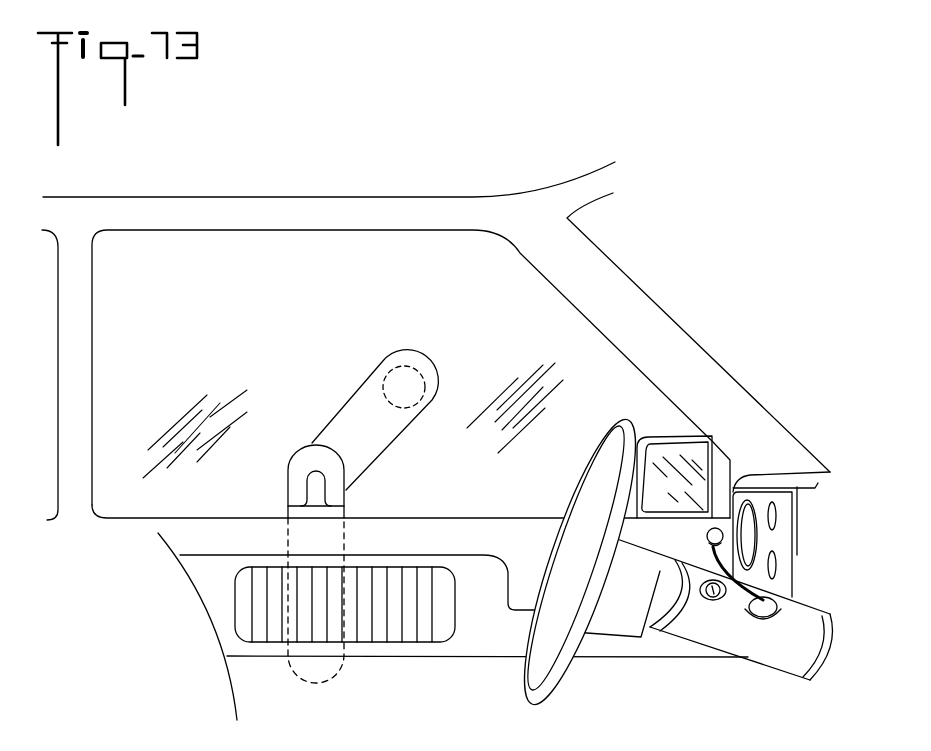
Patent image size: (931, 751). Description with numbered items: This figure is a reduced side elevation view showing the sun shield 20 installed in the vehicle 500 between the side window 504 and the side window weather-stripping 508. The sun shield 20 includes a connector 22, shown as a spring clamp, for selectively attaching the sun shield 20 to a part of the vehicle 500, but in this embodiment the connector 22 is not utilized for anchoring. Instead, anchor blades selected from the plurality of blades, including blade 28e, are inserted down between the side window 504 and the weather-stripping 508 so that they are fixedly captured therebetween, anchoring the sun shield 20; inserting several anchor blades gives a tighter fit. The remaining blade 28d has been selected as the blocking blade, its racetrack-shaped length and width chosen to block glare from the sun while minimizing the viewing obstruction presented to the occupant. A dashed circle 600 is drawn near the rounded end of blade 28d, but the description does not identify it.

The sun shield 20 is at (368, 531).
The connector 22 is at (332, 512).
The blade 28d is at (377, 435).
The blade 28e is at (313, 682).
The vehicle 500 is at (722, 350).
The side window 504 is at (220, 250).
The side window weather-stripping 508 is at (255, 518).
The sensor 600 is at (405, 388).